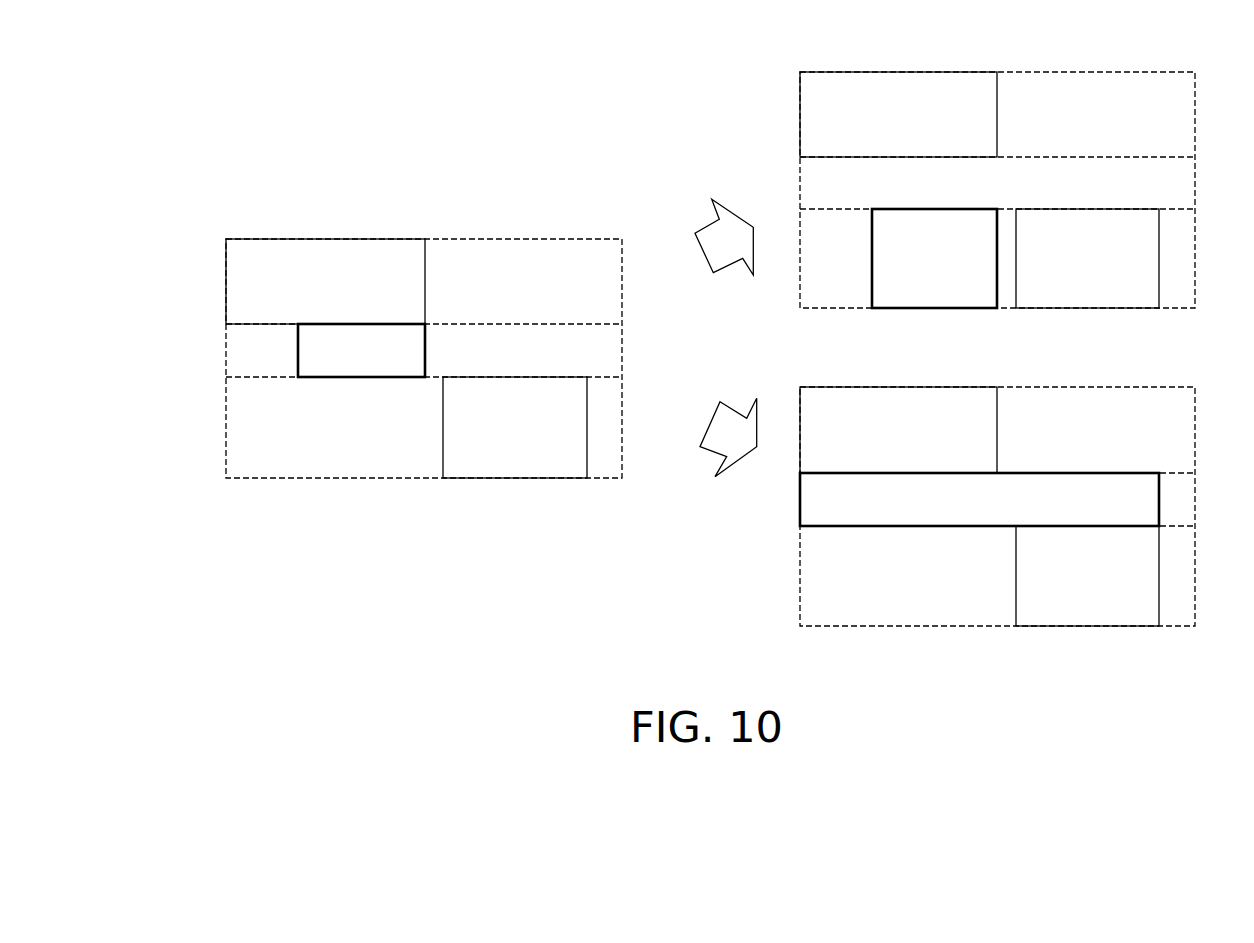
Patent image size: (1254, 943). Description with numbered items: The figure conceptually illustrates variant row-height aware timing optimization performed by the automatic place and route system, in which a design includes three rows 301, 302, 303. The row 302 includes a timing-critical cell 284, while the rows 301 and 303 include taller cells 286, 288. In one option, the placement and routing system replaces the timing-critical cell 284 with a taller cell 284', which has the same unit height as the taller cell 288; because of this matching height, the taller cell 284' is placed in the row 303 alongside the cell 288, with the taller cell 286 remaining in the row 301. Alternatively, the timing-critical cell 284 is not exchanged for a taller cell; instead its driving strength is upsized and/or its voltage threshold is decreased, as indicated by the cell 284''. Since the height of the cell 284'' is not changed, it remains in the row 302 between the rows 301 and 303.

The taller cell 286 is at (243, 238).
The timing-critical cell 284 is at (295, 371).
The taller cell 284' is at (886, 278).
The cell 284'' is at (932, 504).
The taller cell 288 is at (492, 480).
The row 301 is at (609, 283).
The row 302 is at (609, 358).
The row 303 is at (280, 448).